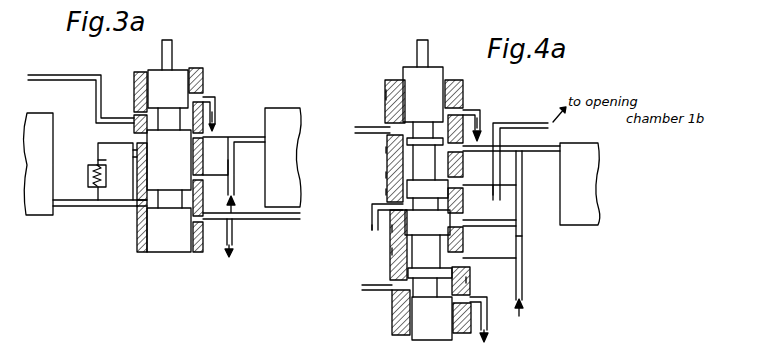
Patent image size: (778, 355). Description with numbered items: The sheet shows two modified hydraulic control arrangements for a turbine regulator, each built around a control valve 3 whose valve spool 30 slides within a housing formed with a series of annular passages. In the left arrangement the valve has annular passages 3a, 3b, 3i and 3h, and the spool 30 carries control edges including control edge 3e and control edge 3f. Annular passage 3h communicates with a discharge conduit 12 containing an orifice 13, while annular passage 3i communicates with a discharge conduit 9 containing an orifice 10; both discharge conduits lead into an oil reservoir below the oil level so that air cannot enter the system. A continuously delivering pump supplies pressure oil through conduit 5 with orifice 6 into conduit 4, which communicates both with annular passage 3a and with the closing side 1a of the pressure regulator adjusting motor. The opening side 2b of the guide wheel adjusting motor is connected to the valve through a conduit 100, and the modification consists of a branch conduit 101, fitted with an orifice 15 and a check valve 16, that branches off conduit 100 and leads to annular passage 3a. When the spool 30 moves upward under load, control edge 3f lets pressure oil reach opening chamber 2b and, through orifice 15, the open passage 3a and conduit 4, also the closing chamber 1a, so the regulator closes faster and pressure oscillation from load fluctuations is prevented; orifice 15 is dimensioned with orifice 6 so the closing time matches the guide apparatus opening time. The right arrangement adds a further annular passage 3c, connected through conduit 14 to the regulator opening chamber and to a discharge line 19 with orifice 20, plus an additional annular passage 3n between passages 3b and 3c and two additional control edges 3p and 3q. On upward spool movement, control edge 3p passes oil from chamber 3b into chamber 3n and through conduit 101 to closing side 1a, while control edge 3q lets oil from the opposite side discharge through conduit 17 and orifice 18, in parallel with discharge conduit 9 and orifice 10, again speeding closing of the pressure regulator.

In FIG. 3a, the valve spool 30 is at (154, 70).
In FIG. 4a, the valve spool 30 is at (434, 189).
In FIG. 3a, the control valve 3 is at (194, 68).
In FIG. 4a, the control valve 3 is at (393, 81).
In FIG. 3a, the annular passage 3a is at (136, 152).
In FIG. 4a, the annular passage 3a is at (392, 150).
In FIG. 4a, the annular passage 3b is at (469, 280).
In FIG. 4a, the annular passage 3c is at (392, 175).
In FIG. 4a, the control edge 3e is at (390, 127).
In FIG. 3a, the control edge 3f is at (140, 210).
In FIG. 4a, the annular passage 3h is at (386, 96).
In FIG. 4a, the annular passage 3i is at (392, 311).
In FIG. 4a, the additional annular passage 3n is at (398, 228).
In FIG. 4a, the additional control edge 3p is at (395, 250).
In FIG. 4a, the additional control edge 3q is at (395, 192).
In FIG. 3a, the discharge conduit 12 is at (213, 97).
In FIG. 4a, the discharge conduit 12 is at (478, 110).
In FIG. 3a, the orifice 13 is at (216, 118).
In FIG. 4a, the orifice 13 is at (484, 112).
In FIG. 4a, the conduit 14 is at (529, 128).
In FIG. 3a, the side of the pressure adjusting motor 1a is at (275, 122).
In FIG. 4a, the side of the pressure adjusting motor 1a is at (578, 152).
In FIG. 3a, the opening side of the guide wheel adjusting motor 2b is at (42, 118).
In FIG. 3a, the branch conduit 101 is at (99, 146).
In FIG. 4a, the branch conduit 101 is at (484, 217).
In FIG. 3a, the conduit 100 is at (90, 206).
In FIG. 3a, the orifice 15 is at (97, 160).
In FIG. 3a, the check valve 16 is at (90, 176).
In FIG. 3a, the conduit 4 is at (228, 137).
In FIG. 4a, the conduit 4 is at (528, 153).
In FIG. 3a, the conduit 5 is at (234, 184).
In FIG. 4a, the conduit 5 is at (526, 284).
In FIG. 3a, the orifice 6 is at (233, 158).
In FIG. 4a, the orifice 6 is at (522, 236).
In FIG. 3a, the orifice 20 is at (233, 229).
In FIG. 4a, the orifice 20 is at (503, 195).
In FIG. 4a, the discharge line 19 is at (504, 186).
In FIG. 4a, the conduit 17 is at (372, 206).
In FIG. 4a, the orifice 18 is at (372, 214).
In FIG. 4a, the discharge conduit 9 is at (481, 298).
In FIG. 4a, the orifice 10 is at (488, 310).